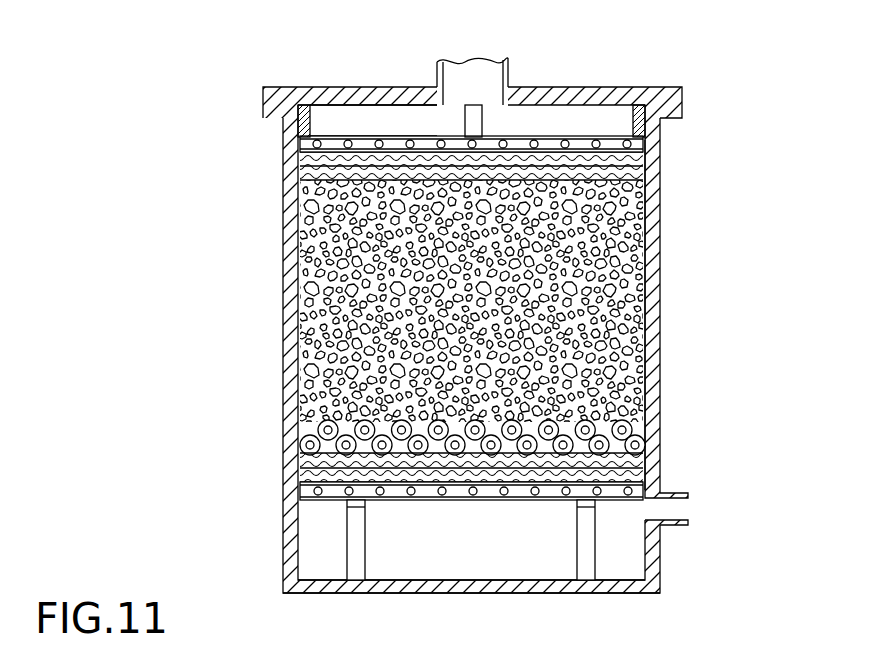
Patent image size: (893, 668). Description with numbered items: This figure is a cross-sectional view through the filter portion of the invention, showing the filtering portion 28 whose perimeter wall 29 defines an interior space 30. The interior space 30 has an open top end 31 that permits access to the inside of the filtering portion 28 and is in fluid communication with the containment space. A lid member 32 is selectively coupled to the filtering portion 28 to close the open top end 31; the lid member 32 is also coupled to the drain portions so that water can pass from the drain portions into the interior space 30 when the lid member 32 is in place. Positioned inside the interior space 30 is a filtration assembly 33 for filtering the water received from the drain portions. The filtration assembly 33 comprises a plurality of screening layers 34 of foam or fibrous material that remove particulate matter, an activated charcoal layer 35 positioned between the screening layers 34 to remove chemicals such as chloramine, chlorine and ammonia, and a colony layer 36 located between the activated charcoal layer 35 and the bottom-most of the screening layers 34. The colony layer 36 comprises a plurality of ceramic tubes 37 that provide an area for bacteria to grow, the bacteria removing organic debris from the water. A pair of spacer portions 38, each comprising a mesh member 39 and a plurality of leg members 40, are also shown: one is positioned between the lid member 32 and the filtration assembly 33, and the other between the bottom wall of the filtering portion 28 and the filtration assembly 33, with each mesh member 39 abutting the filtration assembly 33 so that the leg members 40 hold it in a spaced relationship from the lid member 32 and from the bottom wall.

The filtering portion 28 is at (662, 193).
The perimeter wall 29 is at (647, 278).
The interior space 30 is at (523, 563).
The open top end 31 is at (338, 117).
The lid member 32 is at (640, 87).
The filtration assembly 33 is at (266, 309).
The screening layers 34 is at (625, 160).
The activated charcoal layer 35 is at (627, 350).
The colony layer 36 is at (628, 437).
The ceramic tubes 37 is at (318, 428).
The spacer portions 38 is at (530, 132).
The mesh member 39 is at (582, 140).
The leg members 40 is at (312, 117).